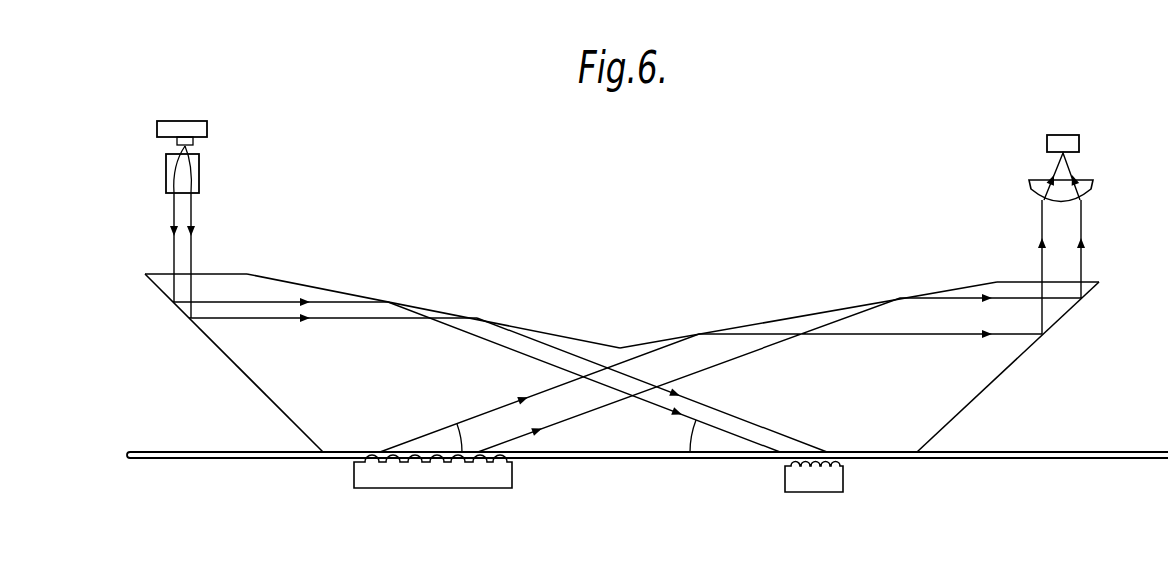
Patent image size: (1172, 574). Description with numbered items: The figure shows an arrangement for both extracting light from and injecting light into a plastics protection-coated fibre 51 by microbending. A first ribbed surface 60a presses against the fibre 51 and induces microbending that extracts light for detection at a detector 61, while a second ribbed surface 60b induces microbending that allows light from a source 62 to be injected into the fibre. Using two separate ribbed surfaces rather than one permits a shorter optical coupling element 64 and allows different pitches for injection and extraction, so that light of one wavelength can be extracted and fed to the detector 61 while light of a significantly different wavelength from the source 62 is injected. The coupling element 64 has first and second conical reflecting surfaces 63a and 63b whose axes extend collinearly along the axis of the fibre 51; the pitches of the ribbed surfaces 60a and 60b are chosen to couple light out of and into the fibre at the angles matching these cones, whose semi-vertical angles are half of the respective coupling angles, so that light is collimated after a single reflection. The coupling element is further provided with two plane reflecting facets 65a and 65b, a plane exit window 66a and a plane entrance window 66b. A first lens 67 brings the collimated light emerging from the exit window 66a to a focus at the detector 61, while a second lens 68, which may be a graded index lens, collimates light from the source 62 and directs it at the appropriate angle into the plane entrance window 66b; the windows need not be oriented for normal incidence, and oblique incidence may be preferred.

The fibre 51 is at (1042, 466).
The first ribbed surface 60a is at (436, 482).
The second ribbed surface 60b is at (820, 492).
The detector 61 is at (1058, 137).
The source 62 is at (198, 124).
The first conical reflecting surface 63a is at (815, 313).
The second conical reflecting surface 63b is at (336, 291).
The optical coupling element 64 is at (630, 436).
The plane reflecting facet 65a is at (1008, 372).
The plane reflecting facet 65b is at (237, 366).
The plane exit window 66a is at (859, 339).
The plane entrance window 66b is at (382, 336).
The first lens 67 is at (1090, 185).
The second lens 68 is at (168, 176).